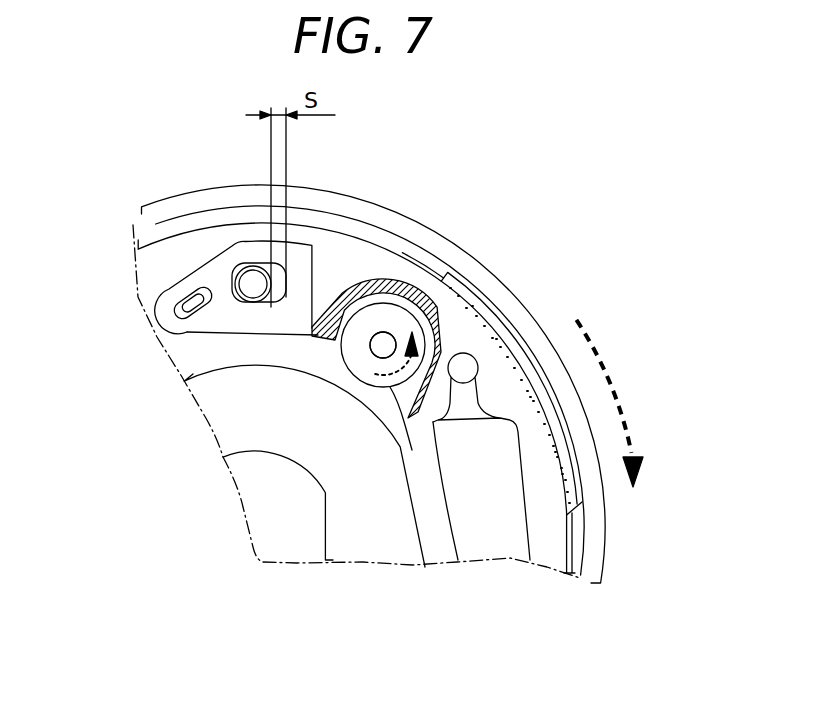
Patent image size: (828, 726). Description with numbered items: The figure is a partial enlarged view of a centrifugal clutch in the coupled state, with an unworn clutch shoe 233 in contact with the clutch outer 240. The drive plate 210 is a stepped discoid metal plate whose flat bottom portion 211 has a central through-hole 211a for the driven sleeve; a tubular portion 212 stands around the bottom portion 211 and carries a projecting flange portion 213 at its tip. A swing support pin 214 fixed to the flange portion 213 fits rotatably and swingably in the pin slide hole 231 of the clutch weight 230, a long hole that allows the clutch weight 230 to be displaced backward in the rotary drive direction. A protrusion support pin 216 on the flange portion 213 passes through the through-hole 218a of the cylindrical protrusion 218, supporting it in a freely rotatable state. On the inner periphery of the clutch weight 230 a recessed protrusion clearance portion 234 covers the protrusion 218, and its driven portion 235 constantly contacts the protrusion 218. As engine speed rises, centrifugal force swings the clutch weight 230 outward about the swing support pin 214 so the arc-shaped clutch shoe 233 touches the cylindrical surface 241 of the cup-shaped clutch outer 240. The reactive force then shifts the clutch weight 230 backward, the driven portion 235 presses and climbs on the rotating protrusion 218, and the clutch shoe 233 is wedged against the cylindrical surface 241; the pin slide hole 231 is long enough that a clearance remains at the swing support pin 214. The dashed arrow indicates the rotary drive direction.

The drive plate 210 is at (157, 234).
The bottom portion 211 is at (377, 556).
The through-hole 211a is at (322, 533).
The tubular portion 212 is at (184, 381).
The flange portion 213 is at (173, 347).
The swing support pin 214 is at (222, 268).
The protrusion support pin 216 is at (390, 338).
The protrusion 218 is at (372, 410).
The through-hole 218a is at (397, 341).
The clutch weight 230 is at (193, 272).
The pin slide hole 231 is at (268, 304).
The clutch shoe 233 is at (580, 510).
The protrusion clearance portion 234 is at (375, 297).
The driven portion 235 is at (400, 440).
The clutch outer 240 is at (323, 187).
The cylindrical surface 241 is at (576, 565).